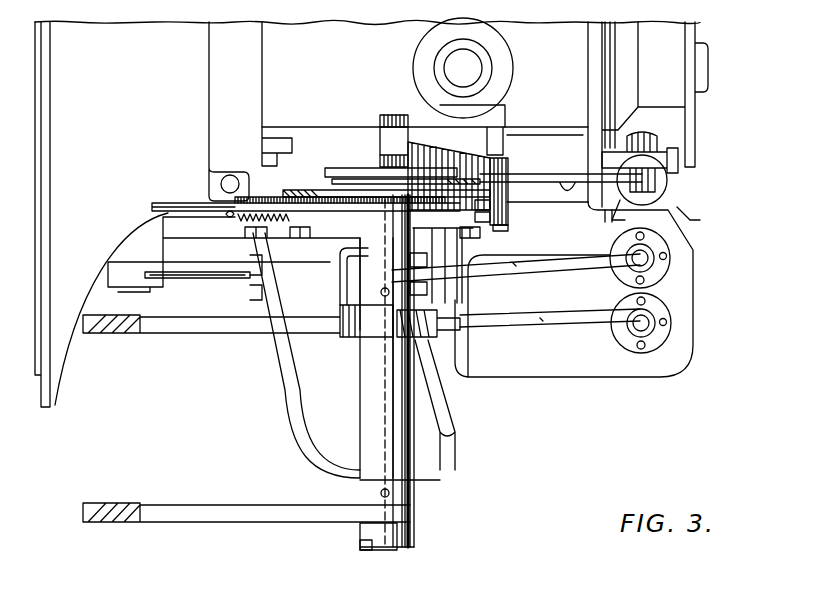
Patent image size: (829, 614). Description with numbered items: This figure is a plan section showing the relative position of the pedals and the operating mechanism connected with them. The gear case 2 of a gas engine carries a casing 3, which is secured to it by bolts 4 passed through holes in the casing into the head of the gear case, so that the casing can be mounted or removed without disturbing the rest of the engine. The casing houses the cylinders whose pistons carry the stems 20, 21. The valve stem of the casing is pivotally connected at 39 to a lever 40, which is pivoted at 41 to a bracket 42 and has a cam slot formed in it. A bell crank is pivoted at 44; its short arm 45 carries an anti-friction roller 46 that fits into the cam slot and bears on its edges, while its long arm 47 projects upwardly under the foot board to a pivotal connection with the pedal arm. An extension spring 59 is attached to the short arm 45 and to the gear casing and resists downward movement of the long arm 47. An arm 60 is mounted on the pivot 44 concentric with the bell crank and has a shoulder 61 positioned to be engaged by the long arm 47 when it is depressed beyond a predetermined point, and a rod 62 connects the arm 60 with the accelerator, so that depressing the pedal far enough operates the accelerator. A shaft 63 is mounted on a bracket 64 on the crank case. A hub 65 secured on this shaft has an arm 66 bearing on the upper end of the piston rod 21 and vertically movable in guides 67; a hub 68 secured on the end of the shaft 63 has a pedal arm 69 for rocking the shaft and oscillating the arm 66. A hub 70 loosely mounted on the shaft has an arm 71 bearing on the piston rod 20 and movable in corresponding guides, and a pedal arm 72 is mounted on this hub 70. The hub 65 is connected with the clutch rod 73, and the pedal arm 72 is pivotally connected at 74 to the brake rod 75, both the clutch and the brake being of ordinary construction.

The gear case 2 is at (193, 160).
The casing 3 is at (567, 373).
The bolts 4 is at (677, 207).
The stem 20 is at (630, 323).
The stem 21 is at (630, 258).
The pivotal connection 39 is at (653, 178).
The lever 40 is at (675, 158).
The pivot 41 is at (330, 190).
The bracket 42 is at (492, 172).
The pivot 44 is at (508, 228).
The short arm 45 is at (455, 188).
The anti-friction roller 46 is at (478, 181).
The long arm 47 is at (300, 200).
The extension spring 59 is at (245, 227).
The arm 60 is at (508, 214).
The shoulder 61 is at (508, 201).
The rod 62 is at (232, 214).
The shaft 63 is at (378, 547).
The bracket 64 is at (275, 289).
The hub 65 is at (335, 322).
The arm 66 is at (513, 263).
The guides 67 is at (668, 256).
The hub 68 is at (367, 530).
The pedal arm 69 is at (323, 513).
The hub 70 is at (380, 360).
The arm 71 is at (540, 318).
The pedal arm 72 is at (377, 280).
The clutch rod 73 is at (232, 274).
The pivotal connection 74 is at (383, 334).
The brake rod 75 is at (440, 338).